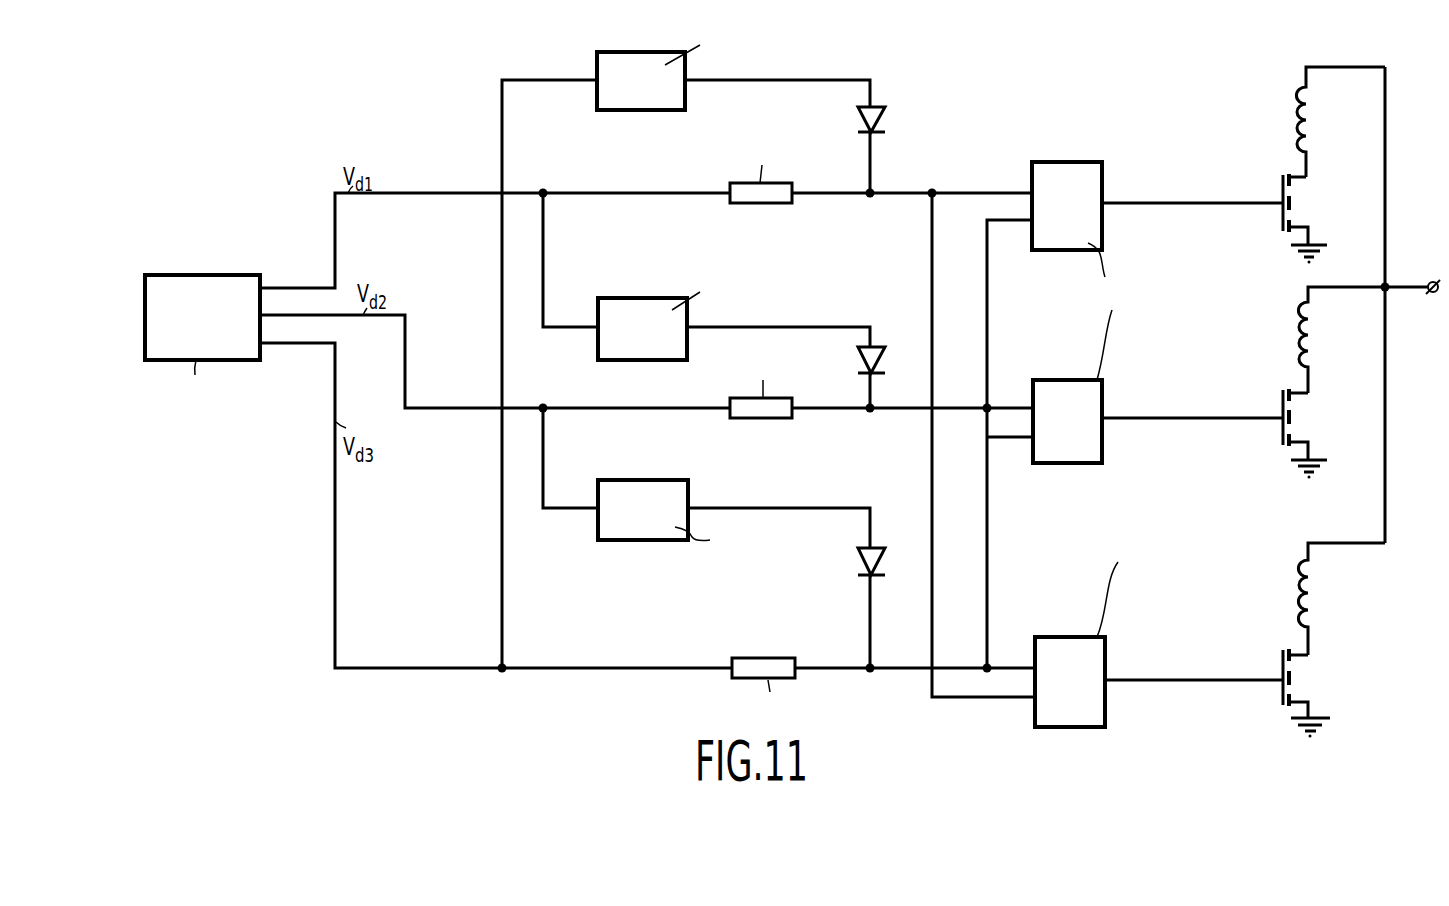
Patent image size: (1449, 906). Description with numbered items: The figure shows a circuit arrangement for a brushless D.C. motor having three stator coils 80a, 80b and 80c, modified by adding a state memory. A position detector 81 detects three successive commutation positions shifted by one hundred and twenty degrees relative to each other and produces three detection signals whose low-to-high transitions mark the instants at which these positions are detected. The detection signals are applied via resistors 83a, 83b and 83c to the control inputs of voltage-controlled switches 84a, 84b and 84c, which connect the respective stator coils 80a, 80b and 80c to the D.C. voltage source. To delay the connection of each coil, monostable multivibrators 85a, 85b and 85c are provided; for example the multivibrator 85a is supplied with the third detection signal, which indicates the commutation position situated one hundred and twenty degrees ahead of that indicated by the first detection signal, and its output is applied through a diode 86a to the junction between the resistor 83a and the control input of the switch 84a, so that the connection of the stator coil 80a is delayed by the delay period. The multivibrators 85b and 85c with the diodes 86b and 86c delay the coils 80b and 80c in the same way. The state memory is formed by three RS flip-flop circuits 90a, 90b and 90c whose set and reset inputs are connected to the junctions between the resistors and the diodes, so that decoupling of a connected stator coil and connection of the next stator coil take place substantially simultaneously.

The position detector 81 is at (215, 276).
The resistor 83a is at (754, 204).
The resistor 83b is at (756, 420).
The resistor 83c is at (755, 658).
The monostable multivibrator 85a is at (620, 52).
The monostable multivibrator 85b is at (620, 298).
The monostable multivibrator 85c is at (620, 480).
The diode 86a is at (886, 115).
The diode 86b is at (885, 355).
The diode 86c is at (885, 552).
The RS flip-flop circuit 90a is at (1065, 162).
The RS flip-flop circuit 90b is at (1065, 380).
The RS flip-flop circuit 90c is at (1065, 637).
The stator coil 80a is at (1297, 108).
The stator coil 80b is at (1297, 322).
The stator coil 80c is at (1300, 575).
The voltage-controlled switch 84a is at (1280, 218).
The voltage-controlled switch 84b is at (1282, 435).
The voltage-controlled switch 84c is at (1283, 690).